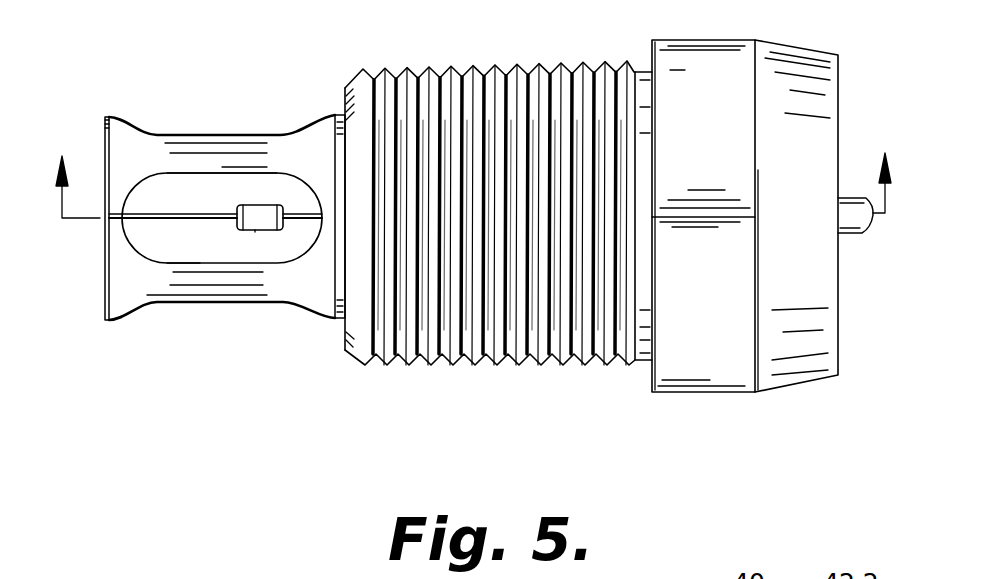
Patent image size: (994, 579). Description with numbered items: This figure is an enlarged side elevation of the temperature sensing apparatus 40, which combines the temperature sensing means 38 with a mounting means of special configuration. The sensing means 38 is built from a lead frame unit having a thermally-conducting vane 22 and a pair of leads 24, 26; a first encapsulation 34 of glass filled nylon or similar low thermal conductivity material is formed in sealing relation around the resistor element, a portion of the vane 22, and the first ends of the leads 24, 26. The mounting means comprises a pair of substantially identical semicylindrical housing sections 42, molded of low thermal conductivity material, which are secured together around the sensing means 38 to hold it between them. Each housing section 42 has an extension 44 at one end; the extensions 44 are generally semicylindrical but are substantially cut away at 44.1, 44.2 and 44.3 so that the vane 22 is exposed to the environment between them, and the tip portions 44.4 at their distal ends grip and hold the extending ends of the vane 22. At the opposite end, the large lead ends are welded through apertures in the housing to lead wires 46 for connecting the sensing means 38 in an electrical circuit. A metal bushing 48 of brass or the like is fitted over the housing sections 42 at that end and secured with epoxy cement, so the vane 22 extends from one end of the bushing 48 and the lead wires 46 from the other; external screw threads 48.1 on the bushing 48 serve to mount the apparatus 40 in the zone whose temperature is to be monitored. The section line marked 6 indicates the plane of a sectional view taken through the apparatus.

The section line 6- 6 is at (473, 171).
The thermally-conducting vane means 22 is at (205, 222).
The lead 24 is at (274, 285).
The lead 26 is at (260, 217).
The first encapsulation 34 is at (255, 232).
The temperature sensing means 38 is at (222, 175).
The temperature sensing apparatus 40 is at (523, 182).
The housing section 42 is at (334, 110).
The housing extension 44 is at (190, 224).
The cut away portion of extension 44.1 is at (158, 133).
The cut away portion of extension 44.2 is at (200, 182).
The cut away portion of extension 44.3 is at (135, 317).
The tip portion 44.4 is at (115, 163).
The lead wire 46 is at (853, 235).
The metal bushing 48 is at (762, 27).
The external screw threads 48.1 is at (538, 66).